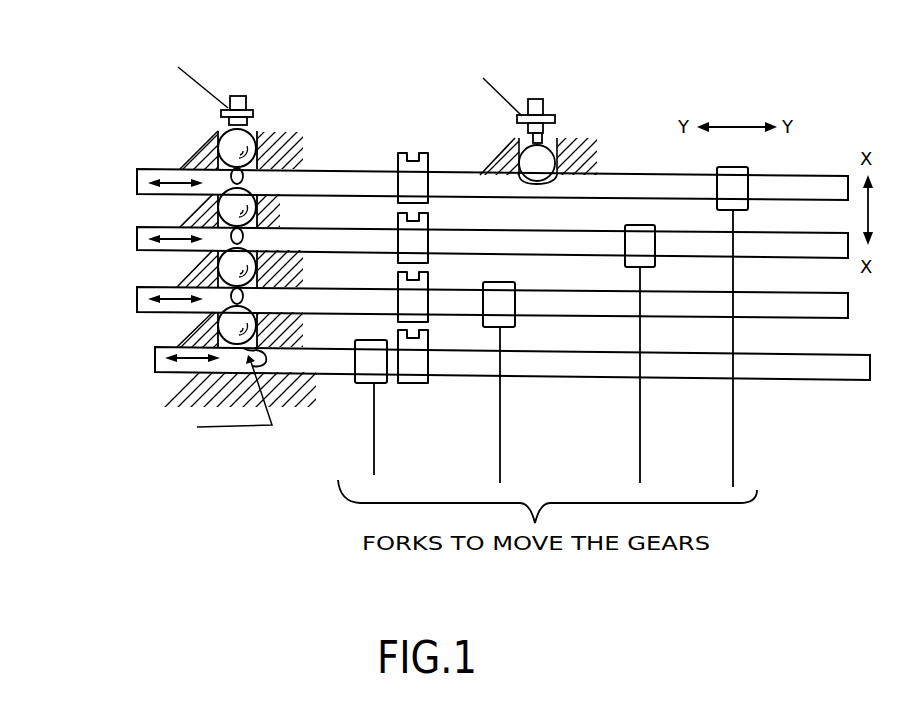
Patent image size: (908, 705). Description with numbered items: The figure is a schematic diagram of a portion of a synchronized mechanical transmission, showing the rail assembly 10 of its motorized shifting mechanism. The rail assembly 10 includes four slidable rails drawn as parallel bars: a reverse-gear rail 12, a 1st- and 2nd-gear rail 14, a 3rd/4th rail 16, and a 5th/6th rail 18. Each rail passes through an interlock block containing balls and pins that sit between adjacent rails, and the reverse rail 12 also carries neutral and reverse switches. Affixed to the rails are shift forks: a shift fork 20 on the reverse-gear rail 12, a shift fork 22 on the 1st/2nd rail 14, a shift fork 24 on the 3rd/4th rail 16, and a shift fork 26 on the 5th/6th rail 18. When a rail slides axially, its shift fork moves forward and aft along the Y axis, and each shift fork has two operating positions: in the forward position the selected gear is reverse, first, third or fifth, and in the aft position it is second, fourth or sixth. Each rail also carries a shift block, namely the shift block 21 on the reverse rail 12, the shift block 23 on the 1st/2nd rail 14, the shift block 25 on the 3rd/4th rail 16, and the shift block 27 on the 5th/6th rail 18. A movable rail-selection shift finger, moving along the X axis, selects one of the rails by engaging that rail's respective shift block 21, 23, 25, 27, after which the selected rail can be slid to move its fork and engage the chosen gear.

The rail assembly 10 is at (336, 146).
The reverse-gear rail 12 is at (152, 170).
The 1st- and 2nd-gear rail 14 is at (152, 227).
The 3rd/4th rail 16 is at (147, 287).
The 5th/6th rail 18 is at (157, 347).
The shift fork 20 is at (733, 440).
The shift block 21 is at (396, 158).
The shift fork 22 is at (640, 440).
The shift block 23 is at (396, 226).
The shift fork 24 is at (500, 438).
The shift block 25 is at (396, 285).
The shift fork 26 is at (374, 438).
The shift block 27 is at (396, 338).